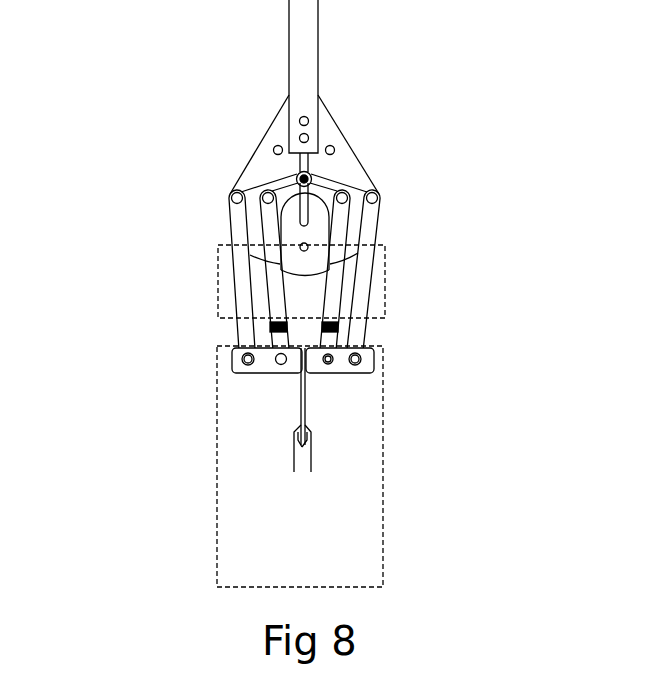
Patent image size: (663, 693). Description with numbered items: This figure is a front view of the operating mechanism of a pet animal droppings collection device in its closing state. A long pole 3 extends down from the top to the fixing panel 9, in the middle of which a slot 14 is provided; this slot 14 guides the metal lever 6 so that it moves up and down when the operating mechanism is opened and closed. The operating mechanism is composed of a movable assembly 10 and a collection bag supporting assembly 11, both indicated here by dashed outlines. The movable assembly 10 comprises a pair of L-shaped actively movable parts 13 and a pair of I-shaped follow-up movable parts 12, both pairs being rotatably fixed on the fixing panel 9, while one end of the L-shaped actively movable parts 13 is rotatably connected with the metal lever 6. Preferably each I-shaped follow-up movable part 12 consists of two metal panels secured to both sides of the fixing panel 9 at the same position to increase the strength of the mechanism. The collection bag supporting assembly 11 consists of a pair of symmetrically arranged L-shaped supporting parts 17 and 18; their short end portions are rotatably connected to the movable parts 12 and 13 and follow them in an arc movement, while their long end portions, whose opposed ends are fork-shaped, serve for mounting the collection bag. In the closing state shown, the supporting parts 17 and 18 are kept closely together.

The shaft 3 is at (308, 65).
The fixing panel 9 is at (280, 112).
The metal lever 6 is at (308, 167).
The I-shaped follow-up movable parts 12 is at (238, 225).
The L-shaped actively movable parts 13 is at (278, 295).
The slot 14 is at (308, 215).
The movable assembly 10 is at (385, 298).
The collection bag supporting assembly 11 is at (217, 455).
The L-shaped supporting part 17 is at (310, 462).
The L-shaped supporting part 18 is at (293, 462).